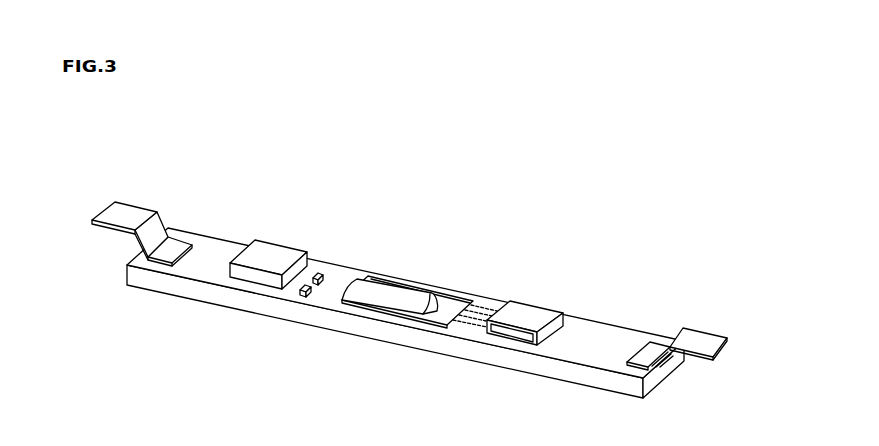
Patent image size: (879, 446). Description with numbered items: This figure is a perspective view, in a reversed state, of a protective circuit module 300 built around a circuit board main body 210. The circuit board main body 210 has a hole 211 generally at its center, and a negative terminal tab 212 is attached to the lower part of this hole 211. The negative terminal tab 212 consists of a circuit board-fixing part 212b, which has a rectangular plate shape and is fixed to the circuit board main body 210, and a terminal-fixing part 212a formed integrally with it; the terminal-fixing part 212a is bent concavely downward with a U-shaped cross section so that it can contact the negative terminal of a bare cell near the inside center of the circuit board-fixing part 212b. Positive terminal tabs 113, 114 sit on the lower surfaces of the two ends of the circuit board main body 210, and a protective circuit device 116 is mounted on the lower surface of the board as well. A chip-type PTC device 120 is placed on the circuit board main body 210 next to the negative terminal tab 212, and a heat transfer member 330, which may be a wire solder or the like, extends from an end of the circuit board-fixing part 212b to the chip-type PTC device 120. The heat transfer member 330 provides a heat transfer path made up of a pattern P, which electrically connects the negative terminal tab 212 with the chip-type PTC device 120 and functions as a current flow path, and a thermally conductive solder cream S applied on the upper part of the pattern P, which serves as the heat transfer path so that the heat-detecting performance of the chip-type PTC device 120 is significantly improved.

The protective circuit module 300 is at (254, 135).
The circuit board main body 210 is at (613, 332).
The hole 211 is at (337, 292).
The positive terminal tab 113 is at (128, 212).
The positive terminal tab 114 is at (700, 339).
The protective circuit device 116 is at (276, 257).
The negative terminal tab 212 is at (445, 200).
The terminal-fixing part 212a is at (380, 291).
The circuit board-fixing part 212b is at (445, 290).
The heat transfer member 330 is at (520, 233).
The pattern P is at (477, 311).
The solder cream S is at (485, 311).
The chip-type PTC device 120 is at (540, 313).